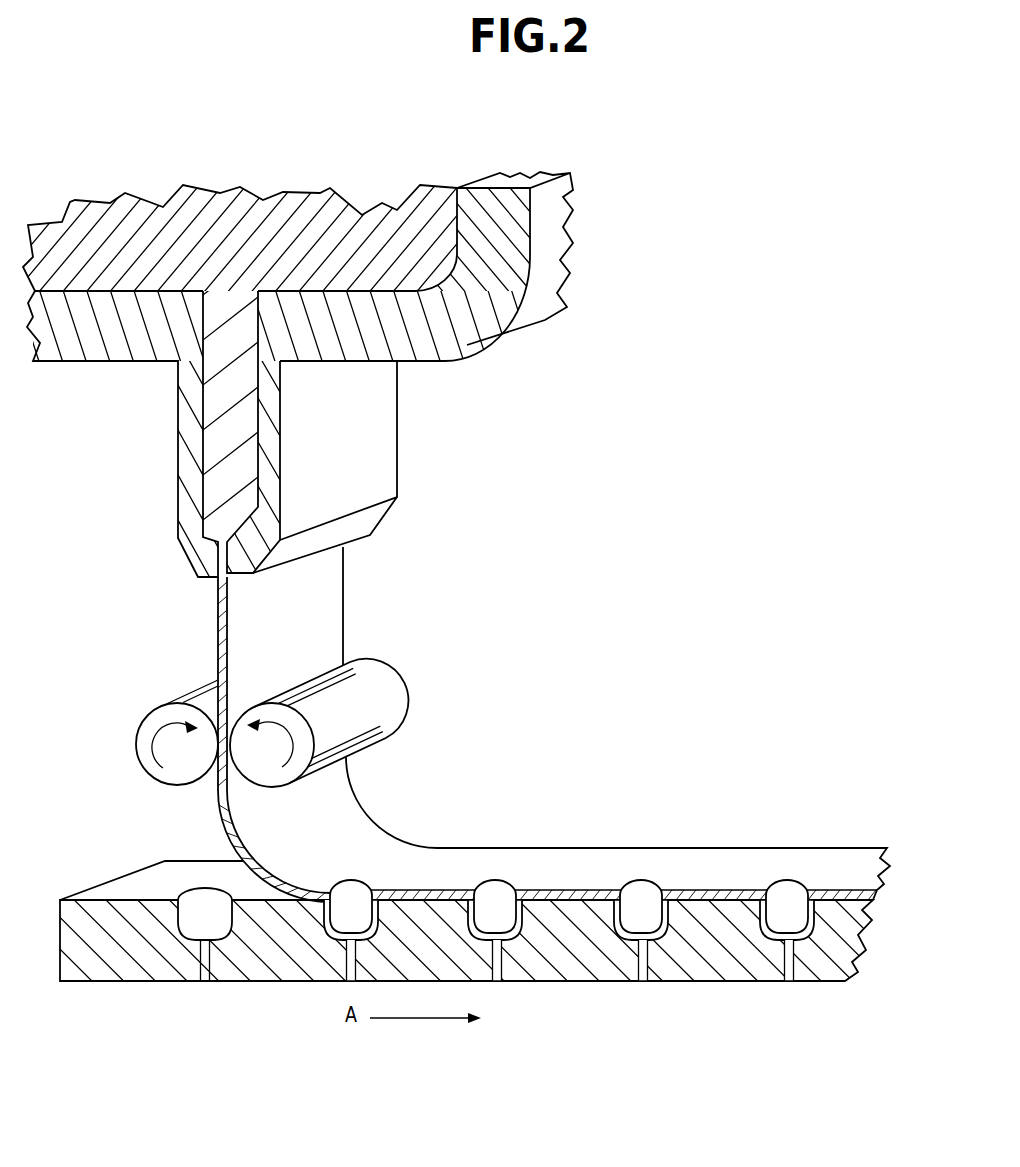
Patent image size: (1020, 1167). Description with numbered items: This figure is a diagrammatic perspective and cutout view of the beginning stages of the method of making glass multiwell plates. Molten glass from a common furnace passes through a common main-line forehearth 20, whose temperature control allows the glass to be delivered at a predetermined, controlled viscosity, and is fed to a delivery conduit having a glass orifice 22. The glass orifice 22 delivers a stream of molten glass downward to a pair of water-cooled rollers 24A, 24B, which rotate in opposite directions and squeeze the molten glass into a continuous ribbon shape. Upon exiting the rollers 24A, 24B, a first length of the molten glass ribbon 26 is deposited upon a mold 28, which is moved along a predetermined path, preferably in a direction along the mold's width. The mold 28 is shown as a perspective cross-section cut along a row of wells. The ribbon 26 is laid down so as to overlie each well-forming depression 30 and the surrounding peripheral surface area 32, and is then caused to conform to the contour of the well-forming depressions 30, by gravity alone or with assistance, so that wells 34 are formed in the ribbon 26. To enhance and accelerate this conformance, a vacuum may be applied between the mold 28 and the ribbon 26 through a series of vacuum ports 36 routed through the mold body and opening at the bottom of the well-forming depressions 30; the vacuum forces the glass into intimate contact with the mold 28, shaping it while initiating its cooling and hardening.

The main-line forehearth 20 is at (323, 158).
The glass orifice 22 is at (367, 522).
The water-cooled roller 24A is at (393, 720).
The water-cooled roller 24B is at (190, 700).
The first length of molten glass ribbon 26 is at (662, 866).
The mold 28 is at (697, 982).
The well-forming depression 30 is at (208, 925).
The peripheral surface area 32 is at (193, 870).
The well 34 is at (576, 782).
The vacuum port 36 is at (788, 980).